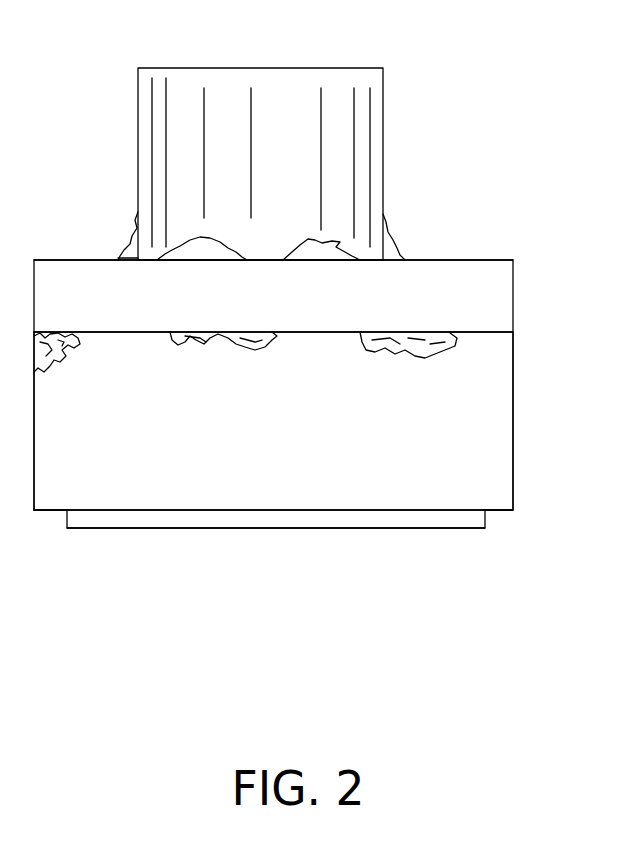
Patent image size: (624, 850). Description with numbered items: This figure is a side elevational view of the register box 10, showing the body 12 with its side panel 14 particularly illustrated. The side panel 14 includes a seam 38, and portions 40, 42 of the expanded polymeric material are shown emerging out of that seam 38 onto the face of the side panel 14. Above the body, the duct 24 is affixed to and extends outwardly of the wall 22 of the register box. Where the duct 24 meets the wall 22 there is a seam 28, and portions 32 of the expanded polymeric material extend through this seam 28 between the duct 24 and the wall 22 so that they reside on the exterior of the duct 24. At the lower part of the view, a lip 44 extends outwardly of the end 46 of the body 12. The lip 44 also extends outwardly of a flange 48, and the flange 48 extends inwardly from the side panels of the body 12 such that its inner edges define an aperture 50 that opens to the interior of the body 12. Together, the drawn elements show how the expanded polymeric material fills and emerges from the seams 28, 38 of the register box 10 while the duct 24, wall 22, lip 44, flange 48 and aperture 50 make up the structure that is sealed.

The register box 10 is at (481, 158).
The body 12 is at (508, 462).
The side panel 14 is at (497, 412).
The wall 22 is at (452, 260).
The duct 24 is at (367, 133).
The seam 28 is at (120, 255).
The portions of expanded polymeric material 32 is at (219, 245).
The seam 38 is at (302, 340).
The portion of expanded polymeric material 40 is at (213, 350).
The portion of expanded polymeric material 42 is at (405, 357).
The lip 44 is at (427, 530).
The end 46 is at (497, 512).
The flange 48 is at (50, 512).
The aperture 50 is at (250, 529).